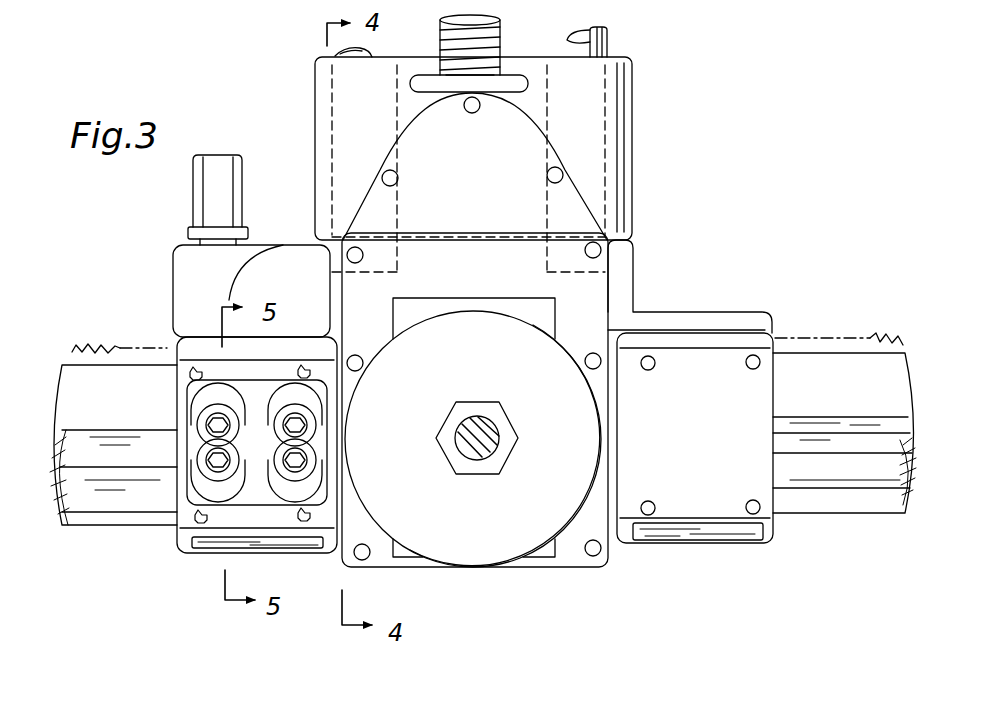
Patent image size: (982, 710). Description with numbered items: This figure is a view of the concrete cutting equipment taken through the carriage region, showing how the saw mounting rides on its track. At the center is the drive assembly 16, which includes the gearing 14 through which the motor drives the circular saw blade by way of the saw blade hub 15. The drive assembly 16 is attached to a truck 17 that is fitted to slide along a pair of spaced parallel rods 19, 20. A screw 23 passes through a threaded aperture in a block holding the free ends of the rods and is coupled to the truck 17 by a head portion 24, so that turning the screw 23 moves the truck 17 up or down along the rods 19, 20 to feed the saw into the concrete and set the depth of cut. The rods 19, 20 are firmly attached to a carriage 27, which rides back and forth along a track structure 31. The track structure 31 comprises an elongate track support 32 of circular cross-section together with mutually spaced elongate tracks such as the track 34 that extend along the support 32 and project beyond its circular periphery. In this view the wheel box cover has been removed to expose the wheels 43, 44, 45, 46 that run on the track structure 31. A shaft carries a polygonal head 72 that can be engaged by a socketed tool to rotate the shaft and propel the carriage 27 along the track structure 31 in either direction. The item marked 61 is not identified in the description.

The gearing 14 is at (612, 290).
The saw blade hub 15 is at (515, 547).
The drive assembly 16 is at (588, 181).
The truck 17 is at (632, 100).
The rod 19 is at (335, 56).
The rod 20 is at (575, 34).
The screw 23 is at (460, 15).
The head portion 24 is at (420, 88).
The carriage 27 is at (773, 537).
The track structure 31 is at (853, 350).
The track support 32 is at (83, 497).
The track 34 is at (852, 398).
The wheel 43 is at (208, 397).
The wheel 44 is at (202, 488).
The wheel 45 is at (313, 400).
The wheel 46 is at (312, 494).
The cable 61 is at (114, 348).
The polygonal head 72 is at (205, 192).